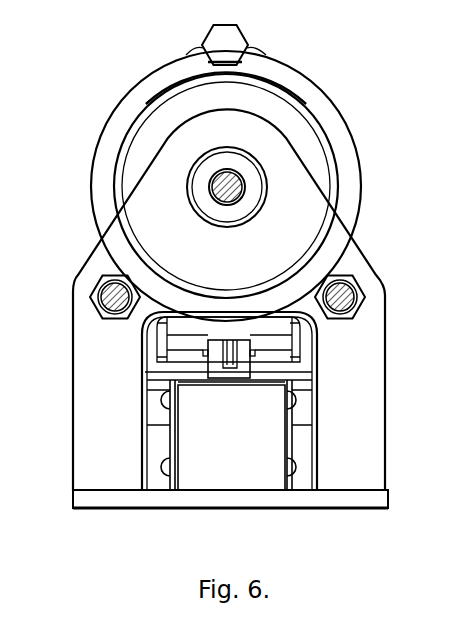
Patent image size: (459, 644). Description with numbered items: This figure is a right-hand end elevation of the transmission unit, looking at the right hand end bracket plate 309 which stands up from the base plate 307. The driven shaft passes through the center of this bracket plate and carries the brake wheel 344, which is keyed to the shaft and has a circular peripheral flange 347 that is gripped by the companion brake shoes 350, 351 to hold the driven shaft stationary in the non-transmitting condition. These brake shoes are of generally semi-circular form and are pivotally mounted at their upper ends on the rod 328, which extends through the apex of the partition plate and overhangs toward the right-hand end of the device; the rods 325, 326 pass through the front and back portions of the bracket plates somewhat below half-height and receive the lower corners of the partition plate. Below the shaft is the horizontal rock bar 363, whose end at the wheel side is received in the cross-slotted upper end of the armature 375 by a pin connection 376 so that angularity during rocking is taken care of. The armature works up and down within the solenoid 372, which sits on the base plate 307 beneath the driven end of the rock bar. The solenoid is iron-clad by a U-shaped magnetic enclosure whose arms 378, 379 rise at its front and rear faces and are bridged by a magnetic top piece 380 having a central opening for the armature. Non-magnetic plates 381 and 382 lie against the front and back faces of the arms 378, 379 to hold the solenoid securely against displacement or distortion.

The base plate 307 is at (333, 500).
The right hand end bracket plate 309 is at (352, 260).
The rod 325 is at (93, 298).
The rod 326 is at (365, 298).
The rod 328 is at (226, 47).
The brake wheel 344 is at (306, 150).
The circular peripheral flange 347 is at (320, 122).
The brake shoe 350 is at (97, 167).
The brake shoe 351 is at (350, 170).
The rock bar 363 is at (227, 345).
The solenoid 372 is at (233, 462).
The armature 375 is at (243, 367).
The pin connection 376 is at (203, 352).
The arm 378 is at (174, 442).
The arm 379 is at (289, 450).
The top piece 380 is at (195, 380).
The plate of non-magnetic material 381 is at (170, 450).
The plate of non-magnetic material 382 is at (293, 440).